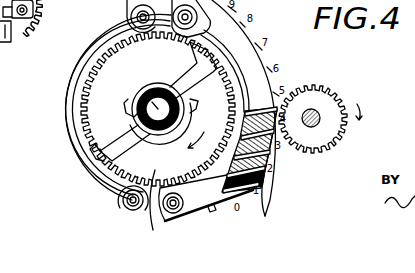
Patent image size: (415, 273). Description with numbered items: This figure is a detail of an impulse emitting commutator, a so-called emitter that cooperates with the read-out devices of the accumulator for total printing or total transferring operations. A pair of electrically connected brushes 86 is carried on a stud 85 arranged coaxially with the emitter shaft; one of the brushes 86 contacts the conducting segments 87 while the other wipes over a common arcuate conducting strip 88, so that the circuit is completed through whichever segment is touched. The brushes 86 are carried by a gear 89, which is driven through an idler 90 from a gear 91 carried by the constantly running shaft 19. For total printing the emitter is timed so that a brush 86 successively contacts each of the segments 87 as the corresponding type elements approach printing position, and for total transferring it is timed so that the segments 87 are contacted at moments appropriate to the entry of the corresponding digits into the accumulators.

The constantly running shaft 19 is at (318, 124).
The stud 85 is at (128, 103).
The brushes 86 is at (112, 187).
The conducting segments 87 is at (248, 116).
The common arcuate conducting strip 88 is at (93, 156).
The gear 89 is at (160, 207).
The idler 90 is at (292, 64).
The gear 91 is at (337, 101).